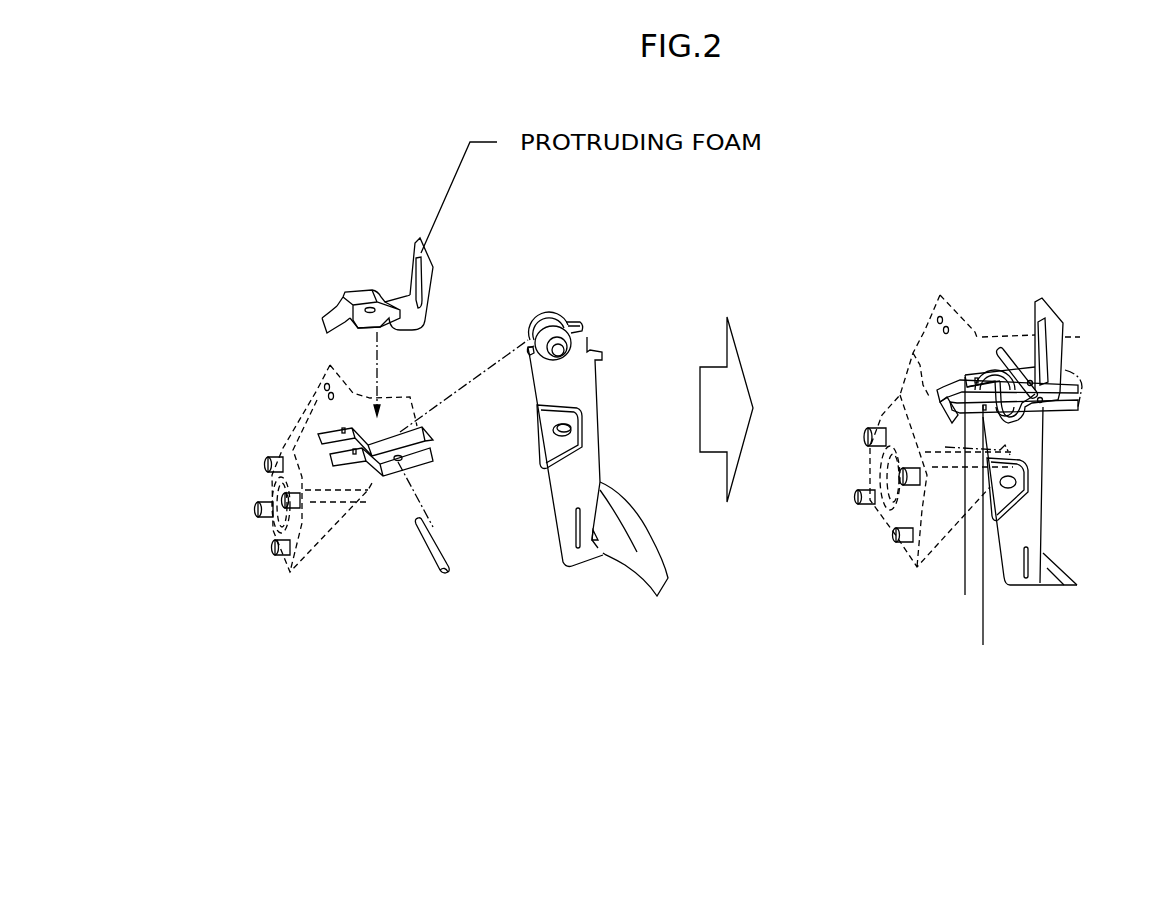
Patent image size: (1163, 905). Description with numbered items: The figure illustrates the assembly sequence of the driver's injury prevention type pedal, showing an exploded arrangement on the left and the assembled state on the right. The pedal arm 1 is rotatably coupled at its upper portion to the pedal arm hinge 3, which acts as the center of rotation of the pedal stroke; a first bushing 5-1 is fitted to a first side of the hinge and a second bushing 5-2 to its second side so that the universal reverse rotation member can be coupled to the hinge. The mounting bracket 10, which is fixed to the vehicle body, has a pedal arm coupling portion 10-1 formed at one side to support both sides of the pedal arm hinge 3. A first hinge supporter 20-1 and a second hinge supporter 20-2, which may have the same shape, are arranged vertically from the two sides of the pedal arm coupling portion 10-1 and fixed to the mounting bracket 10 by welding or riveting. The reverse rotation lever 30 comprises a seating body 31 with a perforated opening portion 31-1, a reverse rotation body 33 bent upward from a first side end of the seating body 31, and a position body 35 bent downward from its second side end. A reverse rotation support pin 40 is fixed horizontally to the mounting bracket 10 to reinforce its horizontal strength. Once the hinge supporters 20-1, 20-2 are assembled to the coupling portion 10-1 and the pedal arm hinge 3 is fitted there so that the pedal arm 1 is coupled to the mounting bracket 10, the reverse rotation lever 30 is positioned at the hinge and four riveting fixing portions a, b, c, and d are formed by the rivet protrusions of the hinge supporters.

The pedal arm 1 is at (610, 440).
The pedal arm hinge 3 is at (558, 318).
The first bushing 5-1 is at (543, 313).
The second bushing 5-2 is at (572, 337).
The mounting bracket 10 is at (327, 503).
The pedal arm coupling portion 10-1 is at (420, 460).
The first hinge supporter 20-1 is at (327, 437).
The second hinge supporter 20-2 is at (343, 458).
The reverse rotation lever 30 is at (358, 140).
The seating body 31 is at (363, 292).
The perforated opening portion 31-1 is at (370, 311).
The reverse rotation body 33 is at (418, 263).
The position body 35 is at (330, 315).
The reverse rotation support pin 40 is at (433, 553).
The riveting fixing portion a is at (961, 497).
The riveting fixing portion b is at (1030, 383).
The riveting fixing portion c is at (982, 534).
The riveting fixing portion d is at (1040, 400).